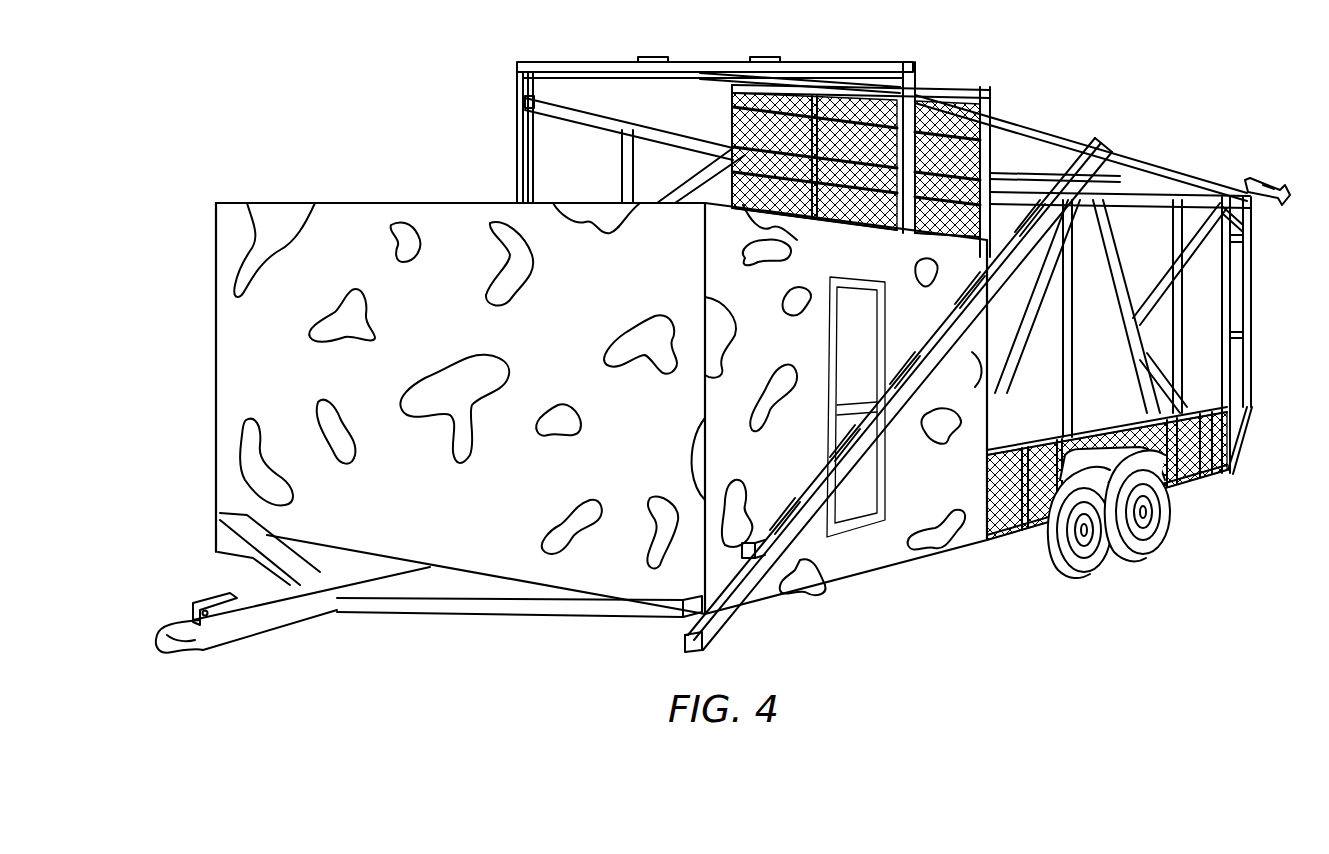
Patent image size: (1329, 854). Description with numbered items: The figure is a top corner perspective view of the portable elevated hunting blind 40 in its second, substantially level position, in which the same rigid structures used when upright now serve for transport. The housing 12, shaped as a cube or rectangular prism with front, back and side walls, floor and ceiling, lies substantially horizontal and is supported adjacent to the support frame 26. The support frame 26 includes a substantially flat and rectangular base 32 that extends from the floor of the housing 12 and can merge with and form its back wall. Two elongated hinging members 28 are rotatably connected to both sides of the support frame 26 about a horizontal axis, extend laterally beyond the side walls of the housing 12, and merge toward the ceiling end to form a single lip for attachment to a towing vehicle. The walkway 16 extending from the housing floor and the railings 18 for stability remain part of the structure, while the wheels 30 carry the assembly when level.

The housing 12 is at (452, 222).
The walkway 16 is at (967, 90).
The railings 18 is at (583, 60).
The support frame 26 is at (1267, 160).
The hinging members 28 is at (1113, 153).
The wheels 30 is at (1150, 543).
The base 32 is at (1010, 537).
The elevated hunting blind 40 is at (1242, 78).